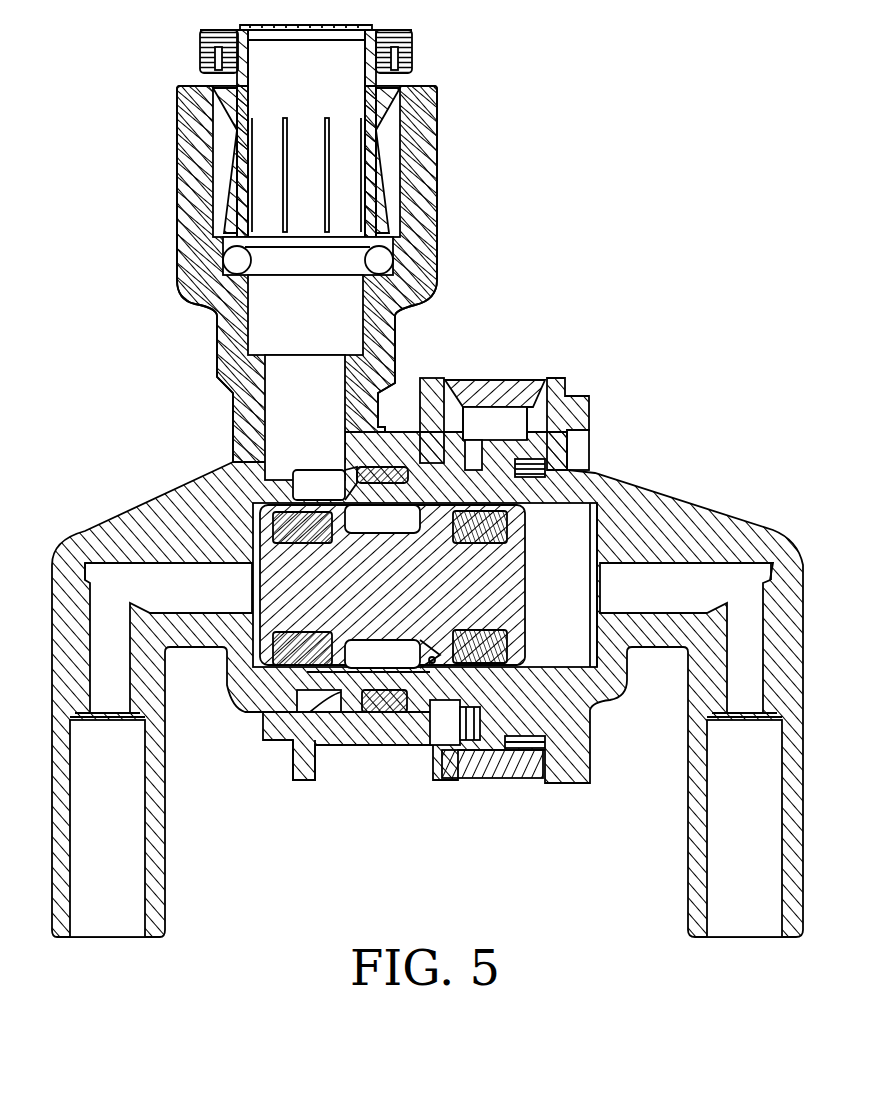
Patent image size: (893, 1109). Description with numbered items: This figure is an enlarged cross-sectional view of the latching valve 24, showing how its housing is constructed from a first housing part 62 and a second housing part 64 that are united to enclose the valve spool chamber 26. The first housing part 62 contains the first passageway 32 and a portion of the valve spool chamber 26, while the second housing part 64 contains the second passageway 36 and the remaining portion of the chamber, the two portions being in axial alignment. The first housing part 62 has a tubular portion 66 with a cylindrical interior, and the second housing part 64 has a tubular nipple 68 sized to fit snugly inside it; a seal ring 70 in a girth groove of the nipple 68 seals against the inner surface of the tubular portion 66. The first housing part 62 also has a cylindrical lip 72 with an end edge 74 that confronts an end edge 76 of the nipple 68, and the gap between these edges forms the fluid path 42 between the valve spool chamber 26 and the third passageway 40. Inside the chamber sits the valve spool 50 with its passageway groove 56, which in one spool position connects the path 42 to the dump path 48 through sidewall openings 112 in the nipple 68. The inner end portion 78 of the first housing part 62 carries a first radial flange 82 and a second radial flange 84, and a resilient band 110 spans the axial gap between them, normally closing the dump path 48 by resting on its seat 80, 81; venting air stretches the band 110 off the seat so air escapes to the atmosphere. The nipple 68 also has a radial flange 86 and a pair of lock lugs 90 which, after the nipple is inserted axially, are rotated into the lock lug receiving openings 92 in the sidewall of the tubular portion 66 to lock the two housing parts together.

The latching valve 24 is at (175, 474).
The valve spool chamber 26 is at (570, 598).
The first passageway 32 is at (130, 856).
The second passageway 36 is at (725, 852).
The third passageway 40 is at (350, 308).
The path 42 is at (322, 477).
The dump path 48 is at (490, 418).
The valve spool 50 is at (373, 584).
The passageway groove 56 is at (375, 718).
The first housing part 62 is at (120, 503).
The second housing part 64 is at (724, 517).
The tubular portion 66 is at (350, 733).
The tubular nipple 68 is at (460, 690).
The seal ring 70 is at (391, 475).
The cylindrical lip 72 is at (310, 668).
The end edge 74 is at (310, 690).
The end edge 76 is at (343, 476).
The inner end portion 78 is at (468, 412).
The seat 80 is at (455, 400).
The seat 81 is at (533, 385).
The first radial flange 82 is at (426, 378).
The second radial flange 84 is at (558, 388).
The radial flange 86 is at (577, 440).
The lock lug 90 is at (544, 479).
The lock lug receiving opening 92 is at (475, 750).
The resilient band 110 is at (515, 770).
The sidewall opening 112 is at (437, 512).